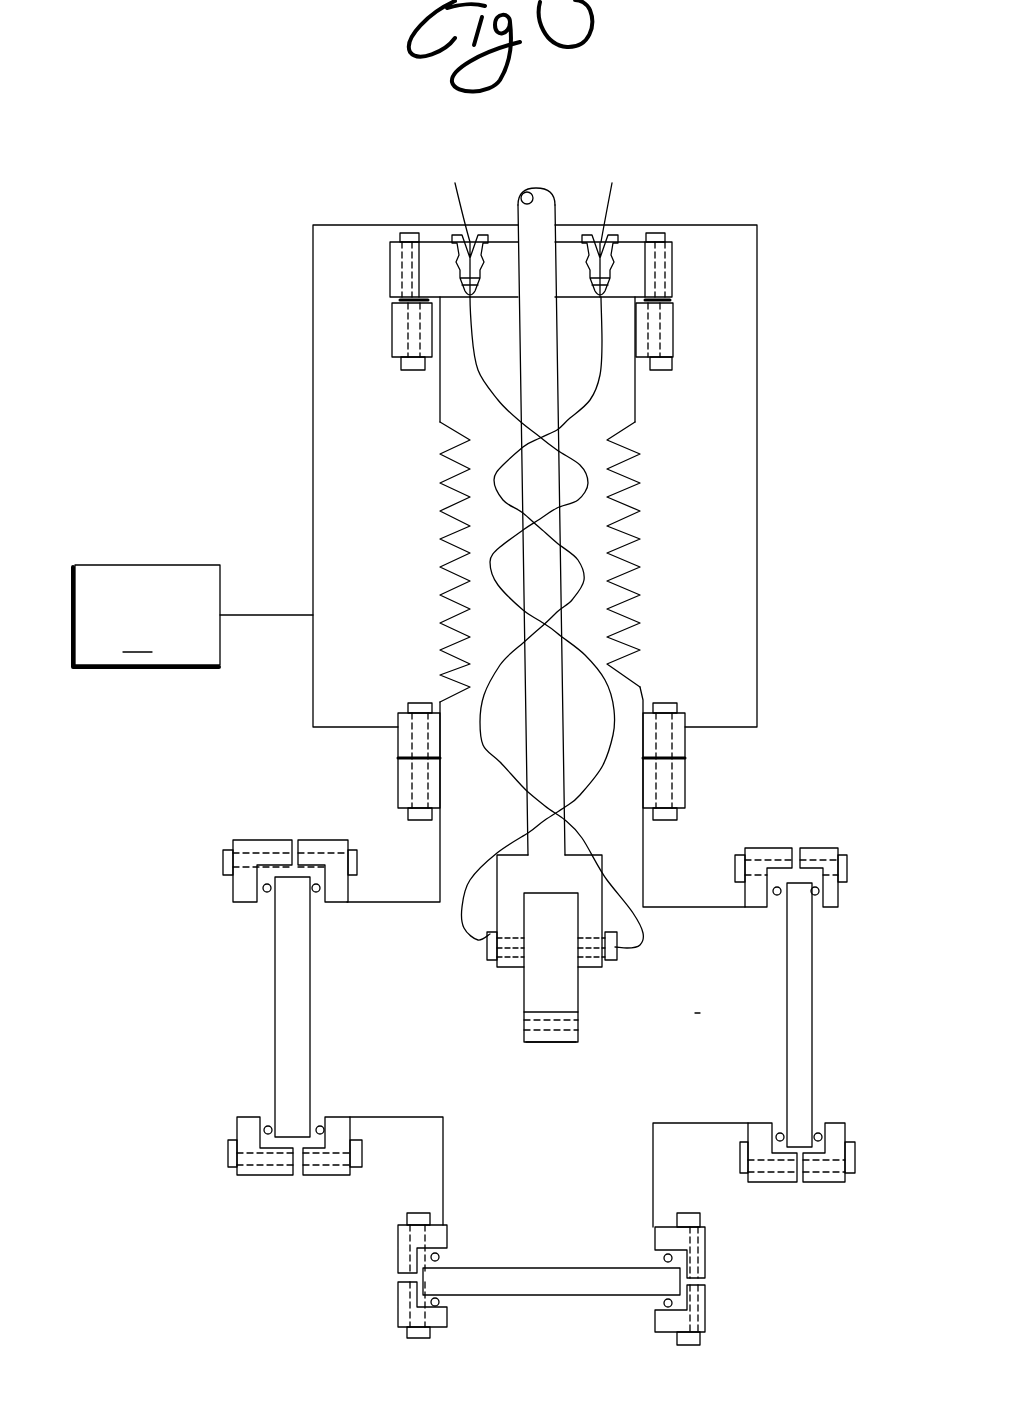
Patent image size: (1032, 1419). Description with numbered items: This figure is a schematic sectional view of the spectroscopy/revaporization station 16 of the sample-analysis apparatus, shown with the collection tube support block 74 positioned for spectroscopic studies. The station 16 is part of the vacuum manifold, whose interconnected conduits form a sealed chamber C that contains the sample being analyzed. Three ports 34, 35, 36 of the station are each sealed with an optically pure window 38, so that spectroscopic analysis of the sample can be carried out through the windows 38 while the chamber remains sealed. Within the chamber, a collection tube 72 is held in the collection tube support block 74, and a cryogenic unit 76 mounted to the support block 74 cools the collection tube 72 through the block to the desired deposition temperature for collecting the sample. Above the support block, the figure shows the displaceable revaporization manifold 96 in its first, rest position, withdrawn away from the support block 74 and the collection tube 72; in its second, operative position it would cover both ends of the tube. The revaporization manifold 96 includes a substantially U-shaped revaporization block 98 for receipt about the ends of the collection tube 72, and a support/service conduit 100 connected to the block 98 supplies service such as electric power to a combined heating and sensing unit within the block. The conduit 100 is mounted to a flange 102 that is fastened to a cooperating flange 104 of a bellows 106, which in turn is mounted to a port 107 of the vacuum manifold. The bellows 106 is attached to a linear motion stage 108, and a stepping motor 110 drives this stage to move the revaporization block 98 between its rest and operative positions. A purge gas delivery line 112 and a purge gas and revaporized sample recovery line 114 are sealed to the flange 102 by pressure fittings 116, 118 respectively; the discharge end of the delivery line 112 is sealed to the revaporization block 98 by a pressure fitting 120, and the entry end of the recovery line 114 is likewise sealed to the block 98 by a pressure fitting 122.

The spectroscopy/revaporization station 16 is at (222, 942).
The port 34 is at (443, 1117).
The port 35 is at (682, 898).
The port 36 is at (655, 1182).
The optically pure window 38 is at (275, 1000).
The collection tube 72 is at (580, 1023).
The collection tube support block 74 is at (547, 1043).
The cryogenic unit 76 is at (580, 1000).
The revaporization manifold 96 is at (589, 820).
The revaporization block 98 is at (604, 881).
The support/service conduit 100 is at (563, 480).
The flange 102 is at (390, 263).
The cooperating flange 104 is at (392, 327).
The bellows 106 is at (452, 487).
The port 107 is at (440, 857).
The linear motion stage 108 is at (313, 538).
The stepping motor 110 is at (193, 616).
The purge gas delivery line 112 is at (482, 388).
The purge gas and revaporized sample recovery line 114 is at (600, 380).
The pressure fitting 116 is at (428, 225).
The pressure fitting 118 is at (630, 225).
The pressure fitting 120 is at (487, 932).
The pressure fitting 122 is at (617, 947).
The sealed chamber C is at (695, 1013).